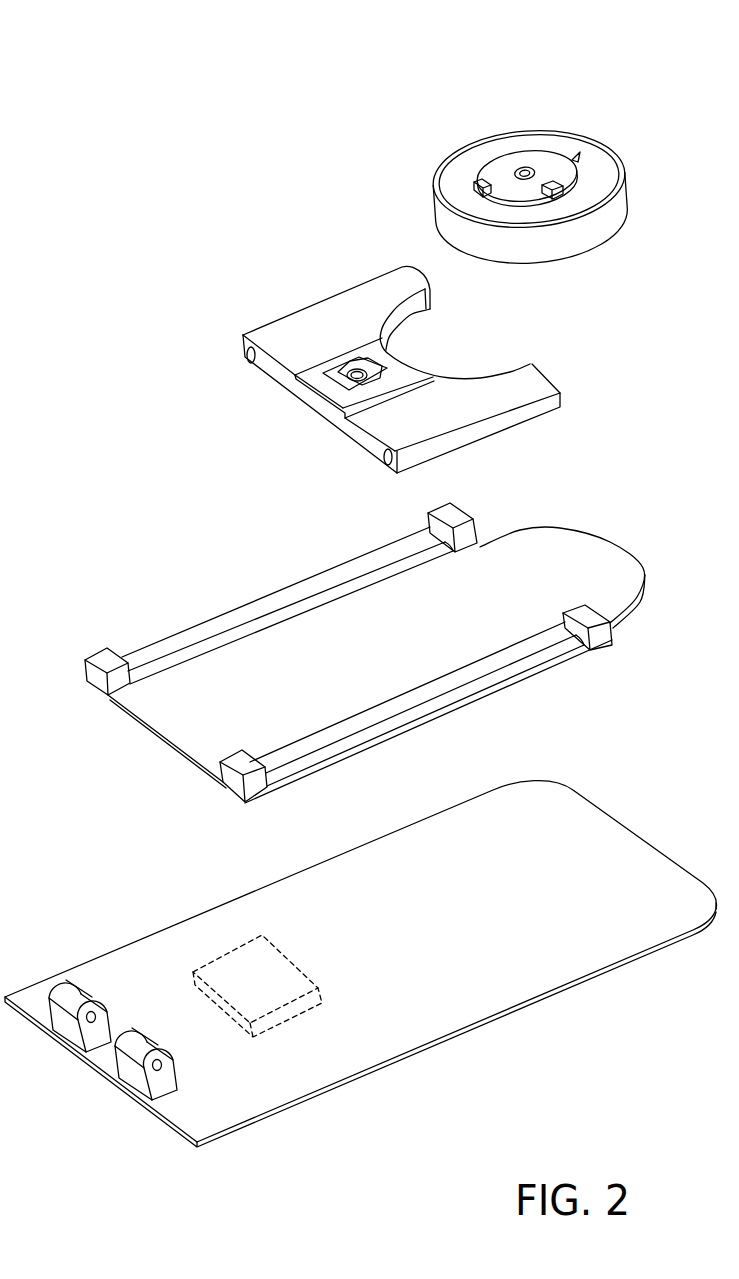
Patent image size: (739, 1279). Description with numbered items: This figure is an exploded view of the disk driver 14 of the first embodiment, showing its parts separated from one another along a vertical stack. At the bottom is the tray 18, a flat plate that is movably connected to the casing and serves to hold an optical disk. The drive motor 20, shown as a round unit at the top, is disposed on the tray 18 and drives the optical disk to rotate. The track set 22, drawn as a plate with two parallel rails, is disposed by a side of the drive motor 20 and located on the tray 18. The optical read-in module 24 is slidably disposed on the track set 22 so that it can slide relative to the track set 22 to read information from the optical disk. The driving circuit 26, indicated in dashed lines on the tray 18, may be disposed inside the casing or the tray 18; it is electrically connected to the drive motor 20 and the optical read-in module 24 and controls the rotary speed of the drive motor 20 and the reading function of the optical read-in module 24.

The disk driver 14 is at (193, 82).
The tray 18 is at (642, 843).
The drive motor 20 is at (622, 190).
The track set 22 is at (628, 548).
The optical read-in module 24 is at (541, 381).
The driving circuit 26 is at (230, 952).